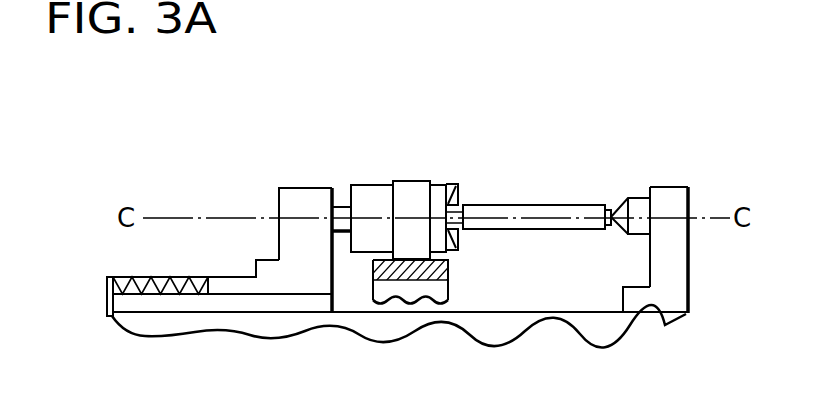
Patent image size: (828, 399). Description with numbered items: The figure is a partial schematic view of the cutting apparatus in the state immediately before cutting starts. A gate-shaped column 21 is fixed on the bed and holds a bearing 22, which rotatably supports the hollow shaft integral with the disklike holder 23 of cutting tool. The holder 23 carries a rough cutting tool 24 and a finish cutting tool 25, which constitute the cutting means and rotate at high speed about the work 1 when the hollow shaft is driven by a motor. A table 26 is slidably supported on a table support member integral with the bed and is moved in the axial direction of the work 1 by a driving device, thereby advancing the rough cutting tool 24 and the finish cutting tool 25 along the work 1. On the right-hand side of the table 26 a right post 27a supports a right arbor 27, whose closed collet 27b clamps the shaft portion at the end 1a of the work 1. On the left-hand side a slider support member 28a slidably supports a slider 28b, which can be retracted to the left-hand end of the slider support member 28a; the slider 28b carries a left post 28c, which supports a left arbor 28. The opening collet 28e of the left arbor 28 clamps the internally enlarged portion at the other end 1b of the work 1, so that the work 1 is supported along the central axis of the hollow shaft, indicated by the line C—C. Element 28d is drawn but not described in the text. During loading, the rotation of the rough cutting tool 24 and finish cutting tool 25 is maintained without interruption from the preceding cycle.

The work 1 is at (523, 205).
The end of the work 1a is at (609, 211).
The other end of the work 1b is at (463, 204).
The gate-shaped column 21 is at (373, 273).
The bearing 22 is at (411, 190).
The holder of cutting tool 23 is at (438, 190).
The rough cutting tool 24 is at (462, 252).
The finish cutting tool 25 is at (455, 192).
The table 26 is at (670, 318).
The right arbor 27 is at (636, 203).
The right post 27a is at (680, 260).
The closed collet 27b is at (614, 210).
The left arbor 28 is at (340, 207).
The slider support member 28a is at (132, 305).
The slider 28b is at (250, 285).
The left post 28c is at (297, 197).
The rack 28d is at (123, 277).
The opening collet 28e is at (460, 238).